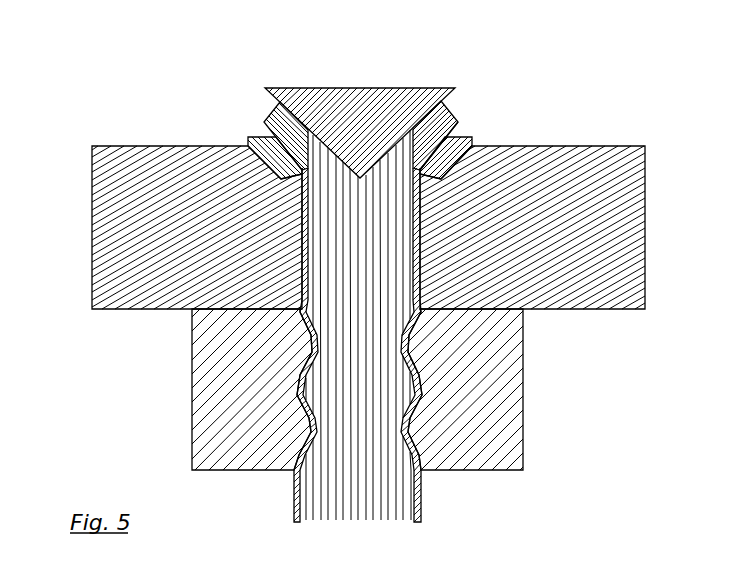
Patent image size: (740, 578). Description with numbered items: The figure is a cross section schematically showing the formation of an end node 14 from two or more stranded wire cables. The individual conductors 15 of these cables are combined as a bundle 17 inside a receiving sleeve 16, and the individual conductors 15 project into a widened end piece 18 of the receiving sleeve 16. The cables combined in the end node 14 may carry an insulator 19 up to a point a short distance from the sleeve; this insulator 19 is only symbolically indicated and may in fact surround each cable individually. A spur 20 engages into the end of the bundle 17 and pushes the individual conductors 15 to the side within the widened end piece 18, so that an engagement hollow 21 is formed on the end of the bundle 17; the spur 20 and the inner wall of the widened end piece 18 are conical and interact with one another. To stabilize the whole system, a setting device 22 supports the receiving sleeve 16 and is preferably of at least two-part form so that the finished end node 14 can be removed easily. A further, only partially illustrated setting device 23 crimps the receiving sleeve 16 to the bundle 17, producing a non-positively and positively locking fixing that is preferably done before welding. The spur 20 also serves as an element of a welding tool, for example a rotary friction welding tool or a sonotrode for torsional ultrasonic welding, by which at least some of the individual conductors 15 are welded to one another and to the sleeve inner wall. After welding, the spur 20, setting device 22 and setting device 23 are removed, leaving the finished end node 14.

The end node 14 is at (478, 128).
The individual conductors 15 is at (372, 525).
The receiving sleeve 16 is at (423, 254).
The bundle 17 is at (404, 505).
The widened end piece 18 is at (448, 152).
The insulator 19 is at (298, 508).
The spur 20 is at (372, 102).
The engagement hollow 21 is at (453, 123).
The setting device 22 is at (138, 298).
The setting device 23 is at (515, 428).